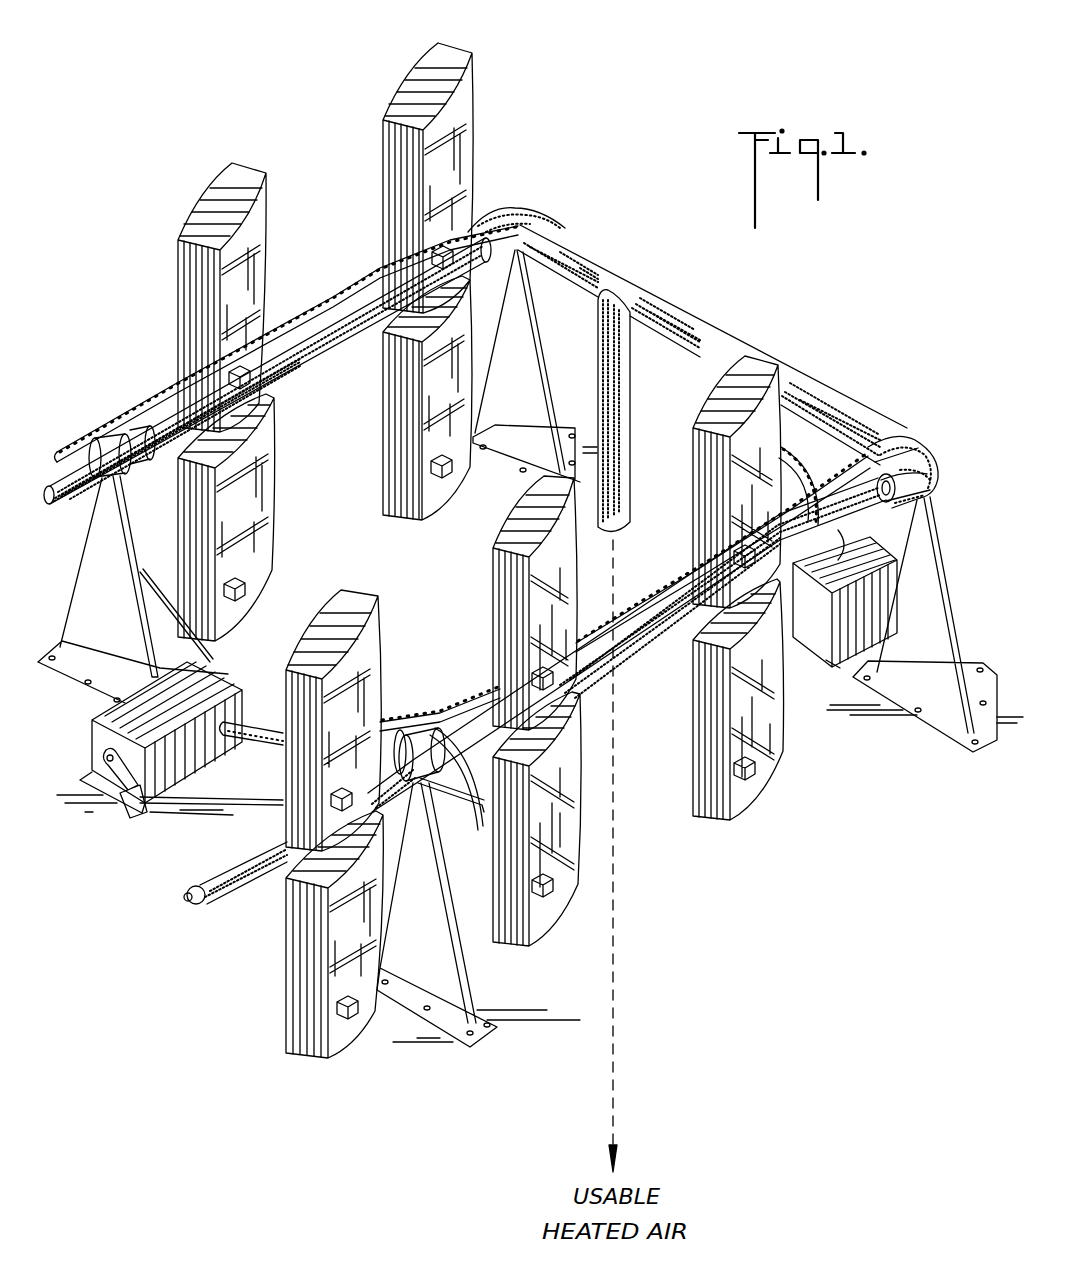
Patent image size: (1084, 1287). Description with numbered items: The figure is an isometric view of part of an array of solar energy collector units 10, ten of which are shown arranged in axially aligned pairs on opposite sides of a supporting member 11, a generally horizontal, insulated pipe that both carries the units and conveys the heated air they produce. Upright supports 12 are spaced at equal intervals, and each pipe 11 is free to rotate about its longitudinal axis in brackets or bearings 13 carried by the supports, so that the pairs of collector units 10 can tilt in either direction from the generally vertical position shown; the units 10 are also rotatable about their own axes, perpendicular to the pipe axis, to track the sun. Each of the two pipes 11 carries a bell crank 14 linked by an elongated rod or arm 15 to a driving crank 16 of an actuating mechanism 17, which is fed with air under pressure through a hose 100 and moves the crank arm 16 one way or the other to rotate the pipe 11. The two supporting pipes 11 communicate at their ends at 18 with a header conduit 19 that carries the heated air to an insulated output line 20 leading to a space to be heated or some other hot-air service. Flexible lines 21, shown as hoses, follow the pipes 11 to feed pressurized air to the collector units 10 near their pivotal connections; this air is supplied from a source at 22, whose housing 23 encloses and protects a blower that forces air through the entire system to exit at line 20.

The solar energy collector unit 10 is at (752, 812).
The supporting member 11 is at (633, 650).
The upright support 12 is at (442, 973).
The bracket or bearing 13 is at (430, 723).
The bell crank 14 is at (479, 832).
The elongated rod or arm 15 is at (230, 797).
The driving crank 16 is at (130, 797).
The actuating mechanism 17 is at (92, 709).
The pipe end connection 18 is at (950, 470).
The header conduit 19 is at (713, 331).
The output line 20 is at (630, 510).
The flexible line 21 is at (630, 605).
The pressurized air source 22 is at (833, 677).
The housing 23 is at (872, 618).
The hose 100 is at (398, 728).